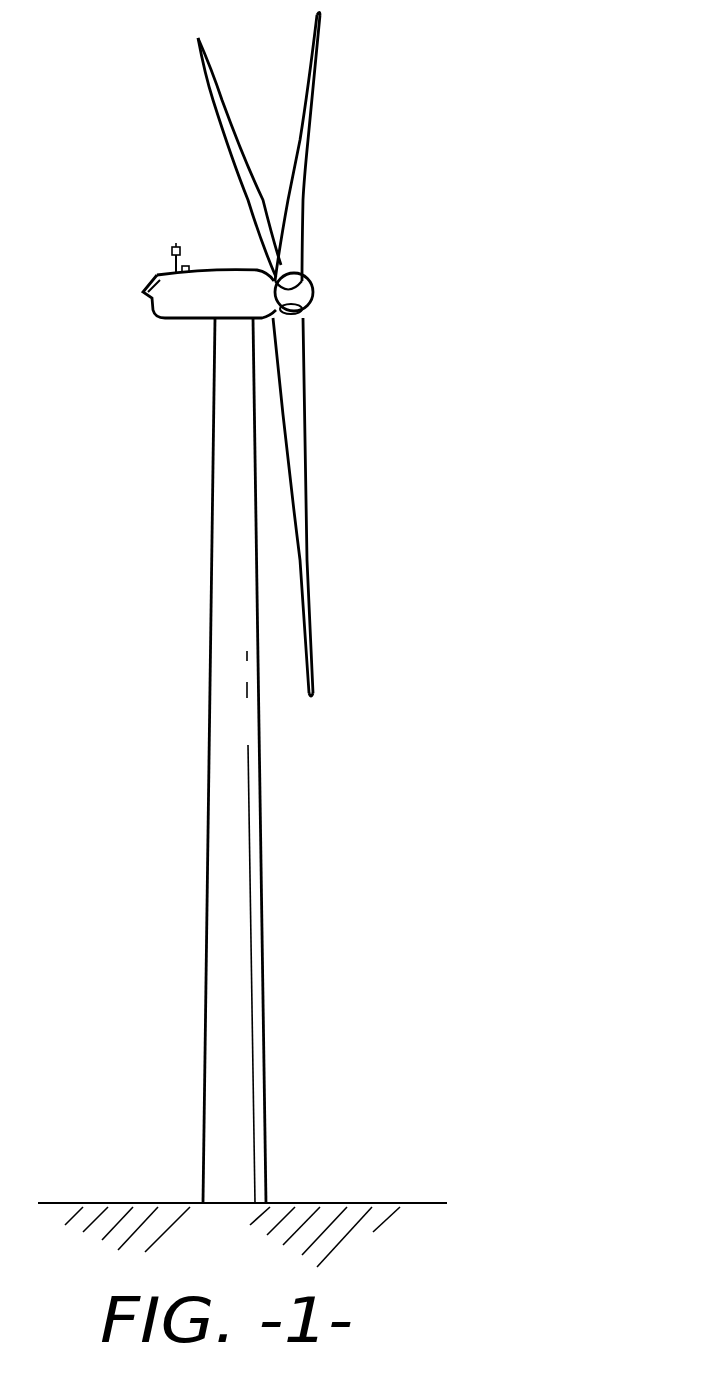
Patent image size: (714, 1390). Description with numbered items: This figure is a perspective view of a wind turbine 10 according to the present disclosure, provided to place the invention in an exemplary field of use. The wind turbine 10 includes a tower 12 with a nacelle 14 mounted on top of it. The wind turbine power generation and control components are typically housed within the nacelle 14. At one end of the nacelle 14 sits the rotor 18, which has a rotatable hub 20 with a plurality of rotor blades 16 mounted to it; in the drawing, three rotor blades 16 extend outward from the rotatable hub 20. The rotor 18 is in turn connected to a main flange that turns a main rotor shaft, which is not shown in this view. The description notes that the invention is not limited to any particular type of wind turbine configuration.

The wind turbine 10 is at (288, 633).
The tower 12 is at (223, 882).
The nacelle 14 is at (187, 322).
The rotor blades 16 is at (242, 135).
The rotor hub 18 is at (326, 262).
The rotatable hub 20 is at (314, 298).